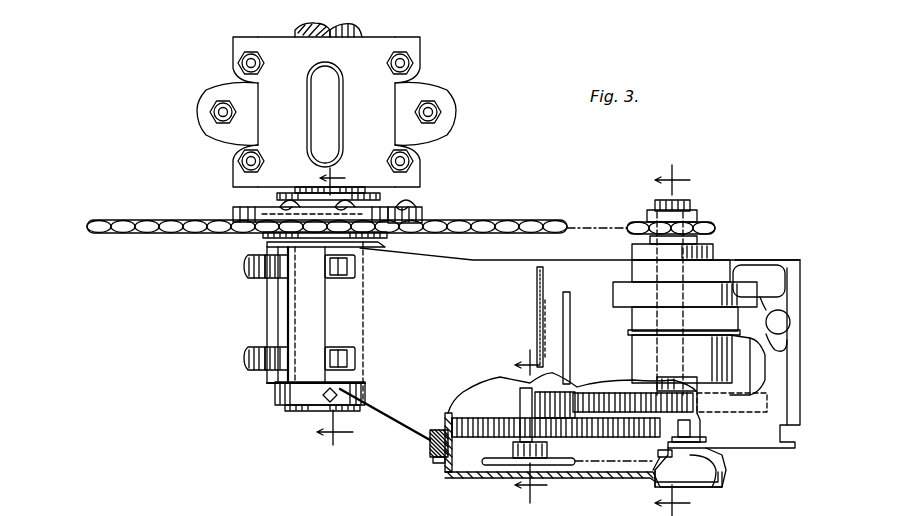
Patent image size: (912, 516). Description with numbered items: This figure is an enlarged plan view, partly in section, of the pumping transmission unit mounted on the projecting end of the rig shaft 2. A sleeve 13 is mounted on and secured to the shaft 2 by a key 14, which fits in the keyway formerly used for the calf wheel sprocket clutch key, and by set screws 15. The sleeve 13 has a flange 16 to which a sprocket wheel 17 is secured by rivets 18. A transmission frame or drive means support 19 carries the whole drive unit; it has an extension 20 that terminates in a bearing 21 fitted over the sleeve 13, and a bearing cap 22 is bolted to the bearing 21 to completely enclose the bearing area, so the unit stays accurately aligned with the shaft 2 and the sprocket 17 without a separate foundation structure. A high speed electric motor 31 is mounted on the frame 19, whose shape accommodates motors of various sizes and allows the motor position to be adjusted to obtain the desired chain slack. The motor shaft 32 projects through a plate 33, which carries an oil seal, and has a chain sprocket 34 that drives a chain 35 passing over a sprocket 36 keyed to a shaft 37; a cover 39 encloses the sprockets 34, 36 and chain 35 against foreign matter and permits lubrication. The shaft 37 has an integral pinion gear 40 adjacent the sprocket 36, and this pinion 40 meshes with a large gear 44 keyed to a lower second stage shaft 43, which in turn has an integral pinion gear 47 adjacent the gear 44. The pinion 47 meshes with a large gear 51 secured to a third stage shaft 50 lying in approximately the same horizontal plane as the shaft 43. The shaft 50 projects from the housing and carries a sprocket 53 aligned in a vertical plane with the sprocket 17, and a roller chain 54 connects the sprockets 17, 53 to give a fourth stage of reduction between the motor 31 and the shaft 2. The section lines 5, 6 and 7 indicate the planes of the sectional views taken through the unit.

The shaft 2 is at (320, 32).
The section line 5 is at (536, 424).
The section line 6 is at (680, 340).
The section line 7 is at (340, 306).
The sleeve 13 is at (285, 405).
The key 14 is at (325, 408).
The set screws 15 is at (340, 392).
The flange 16 is at (424, 213).
The sprocket wheel 17 is at (510, 218).
The rivets 18 is at (410, 205).
The transmission frame 19 is at (590, 259).
The extension 20 is at (400, 410).
The bearing 21 is at (285, 375).
The bearing cap 22 is at (266, 320).
The electric motor 31 is at (715, 318).
The motor shaft 32 is at (692, 436).
The plate 33 is at (750, 448).
The chain sprocket 34 is at (655, 472).
The chain 35 is at (600, 466).
The sprocket 36 is at (478, 466).
The shaft 37 is at (520, 400).
The cover 39 is at (447, 465).
The pinion gear 40 is at (492, 418).
The shaft 43 is at (567, 392).
The large gear 44 is at (462, 415).
The pinion gear 47 is at (553, 398).
The shaft 50 is at (678, 383).
The large gear 51 is at (600, 393).
The sprocket 53 is at (712, 228).
The roller chain 54 is at (575, 222).